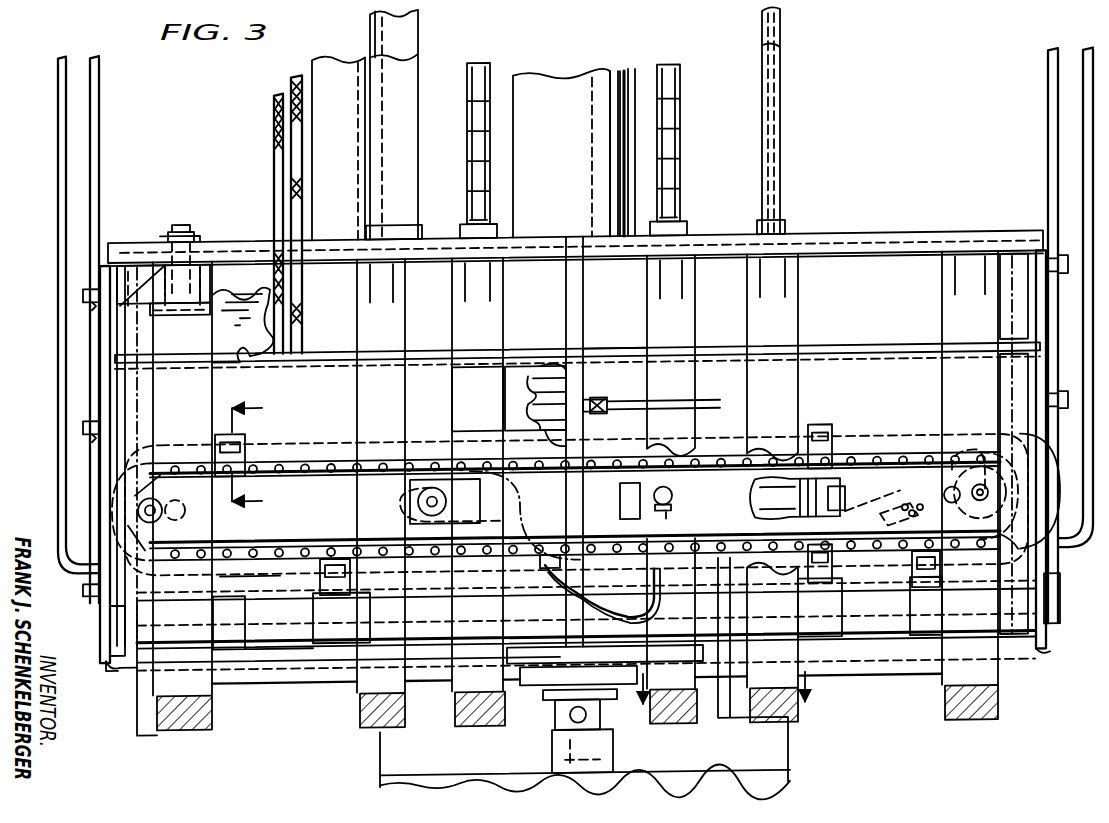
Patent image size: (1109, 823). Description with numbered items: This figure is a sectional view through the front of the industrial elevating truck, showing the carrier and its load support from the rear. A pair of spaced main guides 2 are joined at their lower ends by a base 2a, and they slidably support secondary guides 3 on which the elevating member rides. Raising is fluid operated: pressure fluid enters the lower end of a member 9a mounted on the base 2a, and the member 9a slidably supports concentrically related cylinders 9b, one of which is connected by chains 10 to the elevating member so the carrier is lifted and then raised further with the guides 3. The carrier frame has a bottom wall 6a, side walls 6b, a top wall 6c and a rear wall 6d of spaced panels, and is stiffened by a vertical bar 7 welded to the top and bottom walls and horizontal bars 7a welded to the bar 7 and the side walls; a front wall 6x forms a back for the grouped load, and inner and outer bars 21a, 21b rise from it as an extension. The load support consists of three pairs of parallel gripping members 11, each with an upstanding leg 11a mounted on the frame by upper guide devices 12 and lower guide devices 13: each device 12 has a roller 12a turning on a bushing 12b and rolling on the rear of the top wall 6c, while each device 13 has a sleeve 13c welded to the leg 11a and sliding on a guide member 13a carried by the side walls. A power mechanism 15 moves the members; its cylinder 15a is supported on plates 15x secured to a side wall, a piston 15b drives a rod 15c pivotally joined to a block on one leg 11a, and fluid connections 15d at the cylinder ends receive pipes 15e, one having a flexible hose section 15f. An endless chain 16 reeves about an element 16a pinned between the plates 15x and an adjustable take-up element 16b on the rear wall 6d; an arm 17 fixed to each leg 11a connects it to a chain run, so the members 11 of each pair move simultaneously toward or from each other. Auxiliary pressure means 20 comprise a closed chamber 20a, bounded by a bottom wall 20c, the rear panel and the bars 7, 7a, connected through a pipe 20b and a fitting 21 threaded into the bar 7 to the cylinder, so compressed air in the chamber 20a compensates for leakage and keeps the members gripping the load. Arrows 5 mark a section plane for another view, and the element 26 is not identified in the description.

The main guides 2 is at (405, 99).
The base 2a is at (778, 782).
The secondary guides 3 is at (412, 26).
The section line 5 is at (715, 712).
The bottom wall 6a is at (137, 667).
The side wall 6b is at (106, 657).
The top wall 6c is at (873, 237).
The rear wall 6d is at (117, 394).
The front wall 6x is at (239, 262).
The vertical bar 7 is at (583, 286).
The horizontal bar 7a is at (329, 349).
The member 9a is at (565, 719).
The concentrically related cylinders 9b is at (560, 76).
The chains 10 is at (490, 134).
The load engaging member 11 is at (205, 714).
The upstanding leg 11a is at (205, 686).
The upper guide device 12 is at (203, 219).
The roller 12a is at (160, 236).
The bushing 12b is at (176, 312).
The lower guide device 13 is at (314, 633).
The guide member 13a is at (271, 650).
The sleeve 13c is at (236, 614).
The power mechanism 15 is at (714, 499).
The cylinder 15a is at (846, 468).
The piston 15b is at (800, 550).
The rod 15c is at (621, 491).
The fluid connection 15d is at (658, 489).
The fluid flow pipe 15e is at (653, 591).
The flexible hose section 15f is at (274, 158).
The plates 15x is at (1058, 505).
The movable device 16 is at (922, 445).
The element 16a is at (1000, 496).
The element 16b is at (148, 560).
The arm 17 is at (215, 433).
The auxiliary pressure means 20 is at (530, 383).
The closed chamber 20a is at (566, 379).
The fluid connection pipe 20b is at (632, 402).
The bottom wall 20c is at (566, 441).
The fitting 21 is at (592, 400).
The inner bars 21a is at (100, 166).
The outer bars 21b is at (58, 178).
The column 26 is at (338, 54).